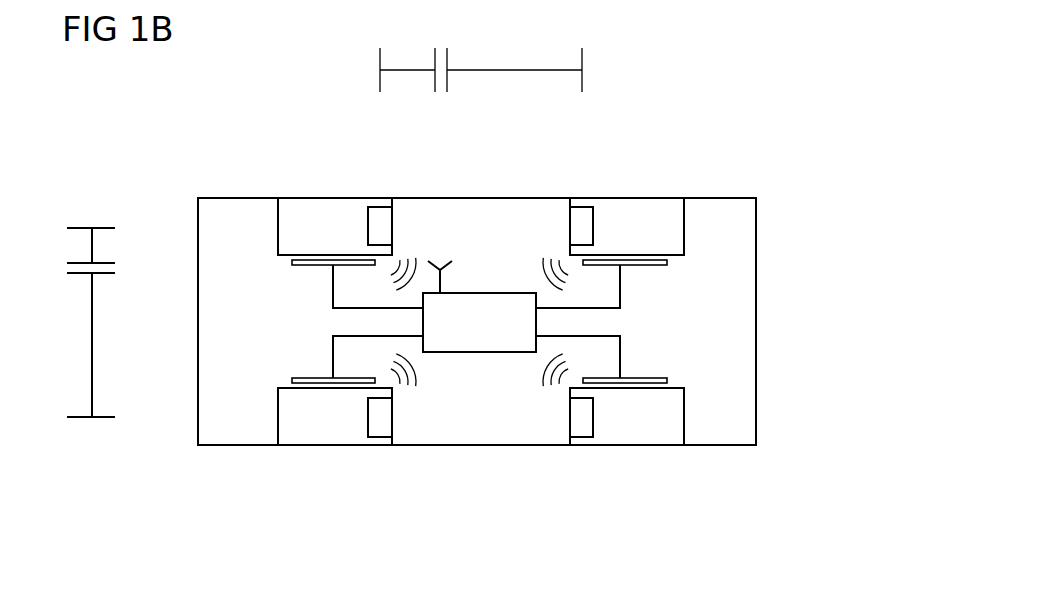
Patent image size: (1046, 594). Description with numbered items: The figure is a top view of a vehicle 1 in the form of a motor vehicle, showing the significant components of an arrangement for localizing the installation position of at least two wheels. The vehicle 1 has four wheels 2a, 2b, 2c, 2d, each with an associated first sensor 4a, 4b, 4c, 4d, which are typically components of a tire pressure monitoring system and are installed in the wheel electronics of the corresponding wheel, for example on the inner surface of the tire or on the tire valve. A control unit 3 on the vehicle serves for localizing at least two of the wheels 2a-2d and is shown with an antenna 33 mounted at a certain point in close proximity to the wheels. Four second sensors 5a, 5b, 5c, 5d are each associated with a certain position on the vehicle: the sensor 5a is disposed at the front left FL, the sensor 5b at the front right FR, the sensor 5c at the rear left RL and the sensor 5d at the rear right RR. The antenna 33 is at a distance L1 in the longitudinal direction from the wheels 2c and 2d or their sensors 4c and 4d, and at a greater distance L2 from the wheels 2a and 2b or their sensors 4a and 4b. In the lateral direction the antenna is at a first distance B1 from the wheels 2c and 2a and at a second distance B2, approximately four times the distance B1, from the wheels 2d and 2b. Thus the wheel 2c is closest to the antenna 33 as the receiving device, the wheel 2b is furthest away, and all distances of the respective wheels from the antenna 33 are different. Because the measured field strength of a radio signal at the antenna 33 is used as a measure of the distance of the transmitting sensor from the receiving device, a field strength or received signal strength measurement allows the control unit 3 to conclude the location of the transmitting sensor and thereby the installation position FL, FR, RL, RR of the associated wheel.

The vehicle 1 is at (788, 207).
The wheel 2a is at (664, 206).
The wheel 2b is at (664, 437).
The wheel 2c is at (297, 206).
The wheel 2d is at (297, 437).
The control unit 3 is at (480, 293).
The antenna 33 is at (441, 268).
The first sensor 4a is at (585, 215).
The first sensor 4b is at (585, 428).
The first sensor 4c is at (378, 215).
The first sensor 4d is at (378, 428).
The second sensor 5a is at (650, 265).
The second sensor 5b is at (650, 379).
The second sensor 5c is at (312, 264).
The second sensor 5d is at (312, 380).
The distance L1 is at (407, 68).
The distance L2 is at (514, 68).
The first distance B1 is at (97, 245).
The second distance B2 is at (97, 345).
The rear left RL is at (332, 198).
The front left FL is at (625, 198).
The rear right RR is at (332, 445).
The front right FR is at (625, 445).